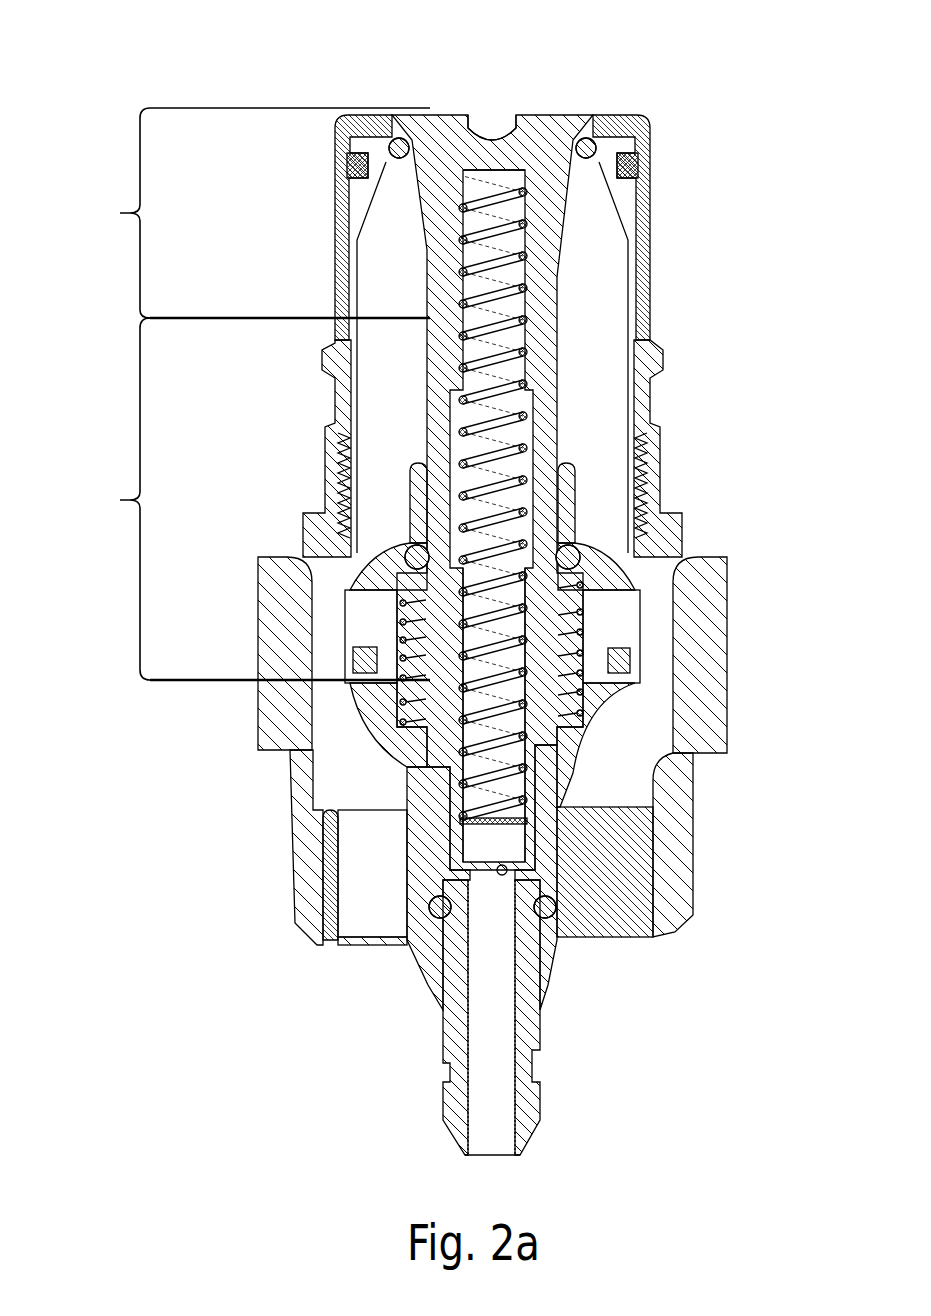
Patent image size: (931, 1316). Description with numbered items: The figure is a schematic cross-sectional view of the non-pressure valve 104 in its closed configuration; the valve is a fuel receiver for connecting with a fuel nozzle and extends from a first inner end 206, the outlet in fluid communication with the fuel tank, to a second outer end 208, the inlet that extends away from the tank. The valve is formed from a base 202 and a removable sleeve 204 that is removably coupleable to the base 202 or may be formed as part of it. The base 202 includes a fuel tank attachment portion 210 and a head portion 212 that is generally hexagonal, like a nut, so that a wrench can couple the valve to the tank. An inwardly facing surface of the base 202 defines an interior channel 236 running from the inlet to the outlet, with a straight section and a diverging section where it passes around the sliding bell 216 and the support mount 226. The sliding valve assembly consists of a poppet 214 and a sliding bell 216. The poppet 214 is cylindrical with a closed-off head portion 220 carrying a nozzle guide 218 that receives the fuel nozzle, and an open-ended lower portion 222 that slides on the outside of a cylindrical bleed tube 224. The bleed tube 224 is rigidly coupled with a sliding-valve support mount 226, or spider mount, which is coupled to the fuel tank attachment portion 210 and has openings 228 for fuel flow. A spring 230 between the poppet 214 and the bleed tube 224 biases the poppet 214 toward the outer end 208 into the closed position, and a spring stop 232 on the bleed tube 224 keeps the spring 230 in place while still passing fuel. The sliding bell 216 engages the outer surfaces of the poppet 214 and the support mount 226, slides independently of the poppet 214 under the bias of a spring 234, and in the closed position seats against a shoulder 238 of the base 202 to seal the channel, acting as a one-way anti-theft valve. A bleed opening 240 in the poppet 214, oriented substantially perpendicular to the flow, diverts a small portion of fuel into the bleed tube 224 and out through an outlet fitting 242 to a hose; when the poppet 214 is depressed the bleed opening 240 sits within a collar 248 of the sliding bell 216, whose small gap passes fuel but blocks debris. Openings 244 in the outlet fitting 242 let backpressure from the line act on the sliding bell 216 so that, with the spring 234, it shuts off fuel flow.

The non-pressure valve 104 is at (118, 64).
The base 202 is at (680, 780).
The removable sleeve 204 is at (662, 428).
The first inner end 206 is at (344, 1055).
The second outer end 208 is at (568, 79).
The fuel tank attachment portion 210 is at (293, 862).
The head portion 212 is at (258, 645).
The poppet 214 is at (576, 213).
The sliding bell 216 is at (580, 513).
The nozzle guide 218 is at (490, 112).
The closed-off head portion 220 is at (238, 213).
The open-ended lower portion 222 is at (238, 499).
The bleed tube 224 is at (528, 625).
The sliding-valve support mount 226 is at (617, 925).
The openings 228 is at (388, 889).
The spring 230 is at (495, 328).
The spring stop 232 is at (470, 822).
The spring 234 is at (568, 597).
The interior channel 236 is at (405, 289).
The shoulder 238 is at (360, 570).
The bleed opening 240 is at (430, 350).
The outlet fitting 242 is at (527, 1053).
The openings 244 is at (505, 878).
The collar 248 is at (418, 462).